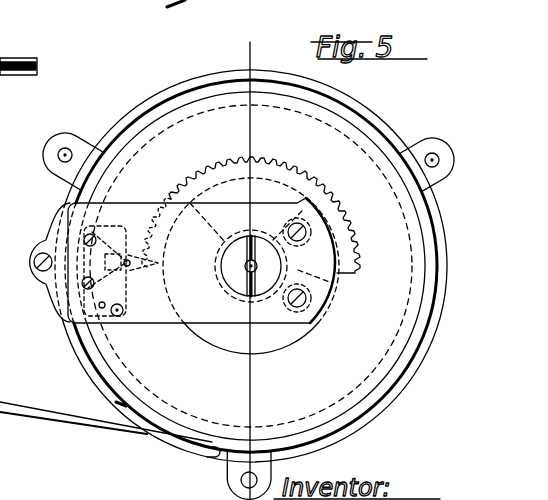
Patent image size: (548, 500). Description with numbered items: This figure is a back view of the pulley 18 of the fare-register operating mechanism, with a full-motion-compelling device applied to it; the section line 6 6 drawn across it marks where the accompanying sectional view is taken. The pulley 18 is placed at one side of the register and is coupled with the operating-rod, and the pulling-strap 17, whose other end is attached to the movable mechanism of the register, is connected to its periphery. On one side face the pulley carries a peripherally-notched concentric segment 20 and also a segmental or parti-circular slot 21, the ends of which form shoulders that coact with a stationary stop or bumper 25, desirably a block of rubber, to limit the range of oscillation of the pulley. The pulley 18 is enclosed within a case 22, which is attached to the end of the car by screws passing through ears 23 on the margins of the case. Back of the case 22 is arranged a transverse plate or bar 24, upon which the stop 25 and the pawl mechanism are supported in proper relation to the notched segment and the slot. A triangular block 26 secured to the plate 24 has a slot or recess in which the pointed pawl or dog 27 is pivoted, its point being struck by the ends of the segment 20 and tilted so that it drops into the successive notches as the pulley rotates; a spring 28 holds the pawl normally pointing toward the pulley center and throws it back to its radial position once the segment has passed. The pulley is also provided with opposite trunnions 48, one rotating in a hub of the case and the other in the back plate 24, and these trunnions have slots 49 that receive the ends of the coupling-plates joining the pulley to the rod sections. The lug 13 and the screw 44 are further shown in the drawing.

The section line 6 6 is at (283, 42).
The mounting lug 13 is at (35, 262).
The pulling-strap 17 is at (2, 406).
The pulley 18 is at (251, 266).
The peripherally-notched concentric segment 20 is at (251, 255).
The segmental slot 21 is at (201, 274).
The case 22 is at (171, 91).
The ears 23 is at (80, 154).
The transverse plate or bar 24 is at (122, 271).
The stop or bumper 25 is at (427, 152).
The triangular block 26 is at (93, 238).
The pawl or dog 27 is at (109, 251).
The spring 28 is at (143, 247).
The screw 44 is at (0, 238).
The trunnions 48 is at (240, 276).
The slots 49 is at (262, 266).